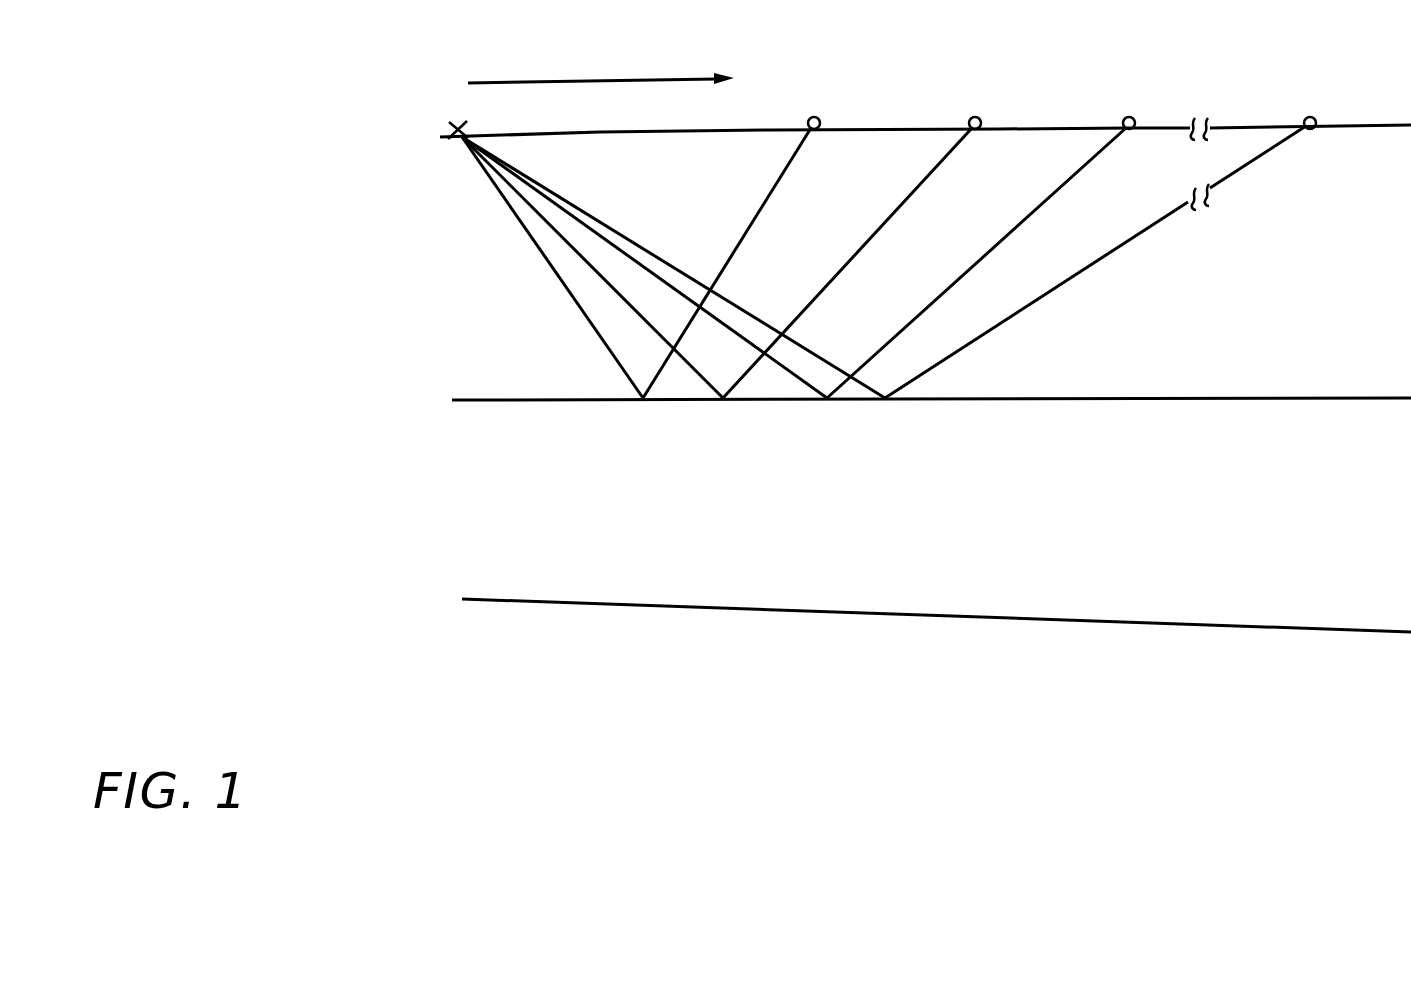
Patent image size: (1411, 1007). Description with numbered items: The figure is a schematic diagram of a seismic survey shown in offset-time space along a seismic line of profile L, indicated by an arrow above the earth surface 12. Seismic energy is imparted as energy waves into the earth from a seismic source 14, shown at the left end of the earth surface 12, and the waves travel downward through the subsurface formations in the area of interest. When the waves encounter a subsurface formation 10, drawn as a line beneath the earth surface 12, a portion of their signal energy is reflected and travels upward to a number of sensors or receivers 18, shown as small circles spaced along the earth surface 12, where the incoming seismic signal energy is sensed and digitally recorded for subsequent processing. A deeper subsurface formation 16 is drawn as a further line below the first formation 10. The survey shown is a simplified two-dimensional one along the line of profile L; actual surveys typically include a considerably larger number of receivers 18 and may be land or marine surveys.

The subsurface formation 10 is at (1253, 400).
The earth surface 12 is at (1163, 132).
The seismic source 14 is at (462, 136).
The subsurface formation 16 is at (1250, 628).
The sensors or receivers 18 is at (819, 118).
The seismic line of profile L is at (581, 80).